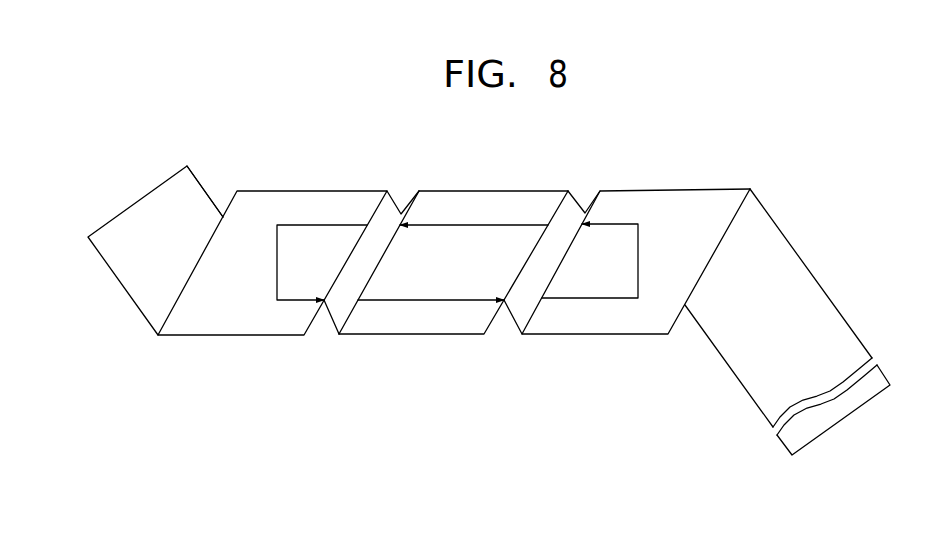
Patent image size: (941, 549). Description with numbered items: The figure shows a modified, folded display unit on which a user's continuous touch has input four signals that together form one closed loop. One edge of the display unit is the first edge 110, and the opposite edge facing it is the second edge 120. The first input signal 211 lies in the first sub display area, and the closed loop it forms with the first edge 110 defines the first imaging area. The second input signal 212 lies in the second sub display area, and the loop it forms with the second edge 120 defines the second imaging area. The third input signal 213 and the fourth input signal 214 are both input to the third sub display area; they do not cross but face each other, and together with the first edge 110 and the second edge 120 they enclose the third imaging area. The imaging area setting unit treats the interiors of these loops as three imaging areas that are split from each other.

The first edge 110 is at (205, 190).
The second edge 120 is at (130, 297).
The first input signal 211 is at (323, 225).
The second input signal 212 is at (622, 223).
The third input signal 213 is at (442, 300).
The fourth input signal 214 is at (424, 225).